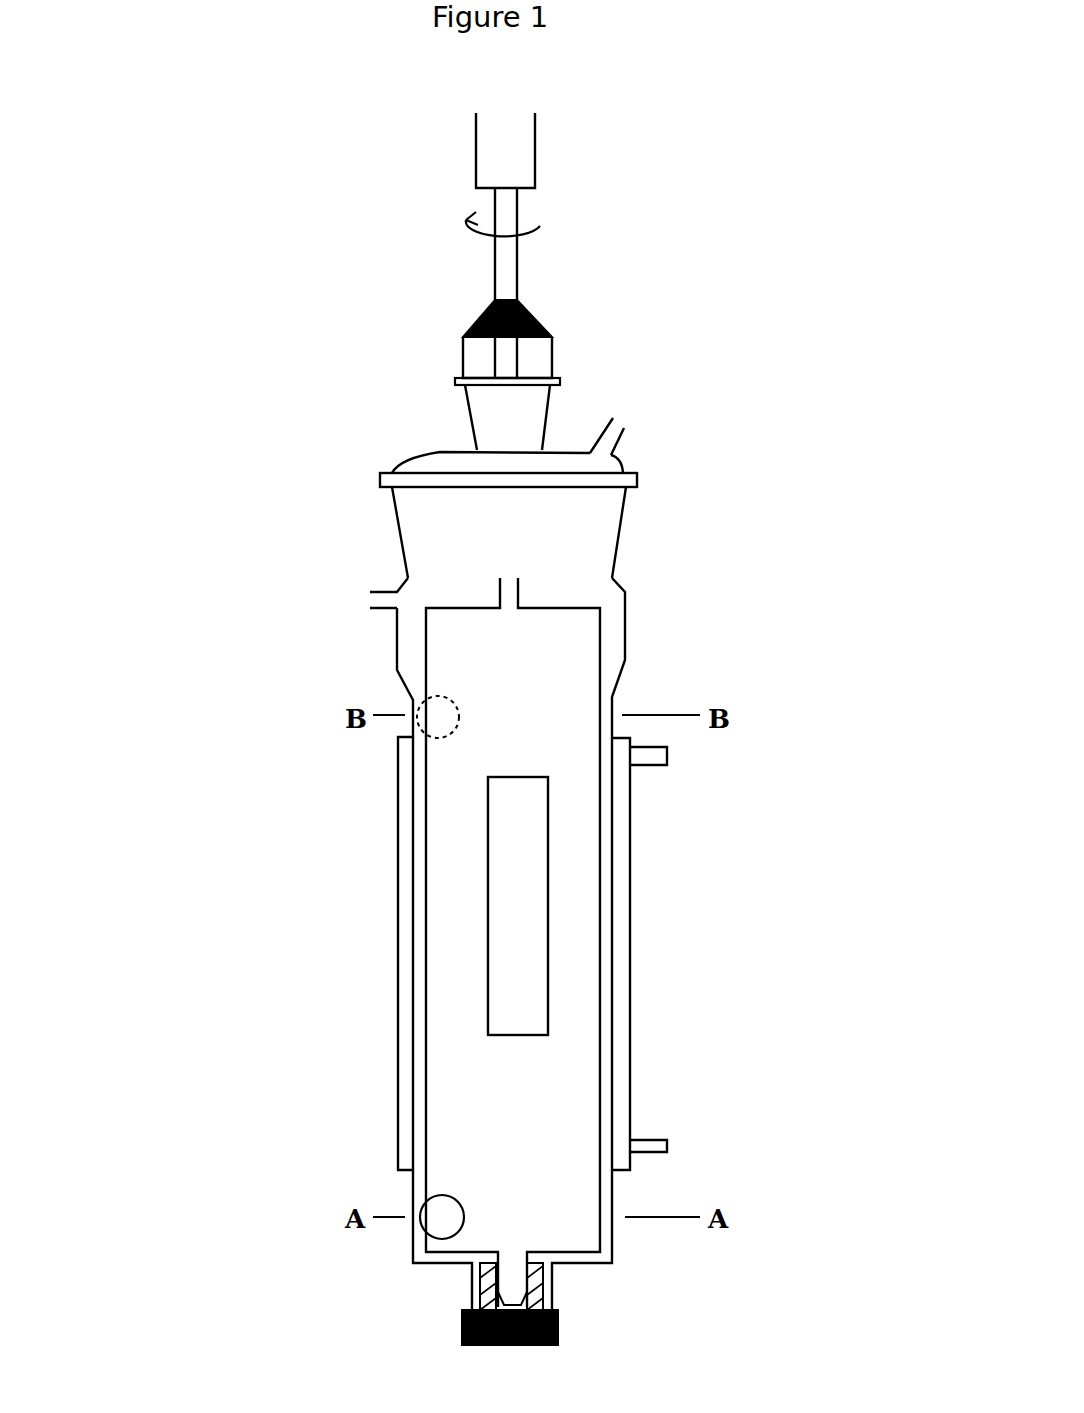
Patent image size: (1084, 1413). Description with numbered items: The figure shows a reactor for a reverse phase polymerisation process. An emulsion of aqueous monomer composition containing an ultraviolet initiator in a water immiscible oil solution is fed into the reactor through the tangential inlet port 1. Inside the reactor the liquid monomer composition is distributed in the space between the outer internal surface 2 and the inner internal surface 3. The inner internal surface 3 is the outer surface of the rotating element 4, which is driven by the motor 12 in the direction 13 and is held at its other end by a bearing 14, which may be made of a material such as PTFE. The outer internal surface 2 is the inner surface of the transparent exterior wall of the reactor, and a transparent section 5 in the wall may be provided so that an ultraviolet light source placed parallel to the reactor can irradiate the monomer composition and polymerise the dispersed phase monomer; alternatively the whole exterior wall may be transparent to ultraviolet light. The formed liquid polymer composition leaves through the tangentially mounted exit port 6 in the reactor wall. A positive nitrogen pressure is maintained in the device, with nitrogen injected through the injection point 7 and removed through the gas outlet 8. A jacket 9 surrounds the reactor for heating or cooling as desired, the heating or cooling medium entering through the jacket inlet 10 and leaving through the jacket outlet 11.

The tangential inlet port 1 is at (437, 1217).
The outer internal surface 2 is at (398, 1145).
The inner internal surface 3 is at (428, 1100).
The rotating element 4 is at (535, 648).
The transparent section 5 is at (523, 912).
The exit port 6 is at (428, 717).
The injection point 7 is at (377, 602).
The gas outlet 8 is at (617, 426).
The jacket 9 is at (413, 973).
The jacket inlet 10 is at (667, 1146).
The jacket outlet 11 is at (667, 757).
The motor 12 is at (523, 153).
The direction 13 is at (525, 244).
The bearing 14 is at (540, 1290).